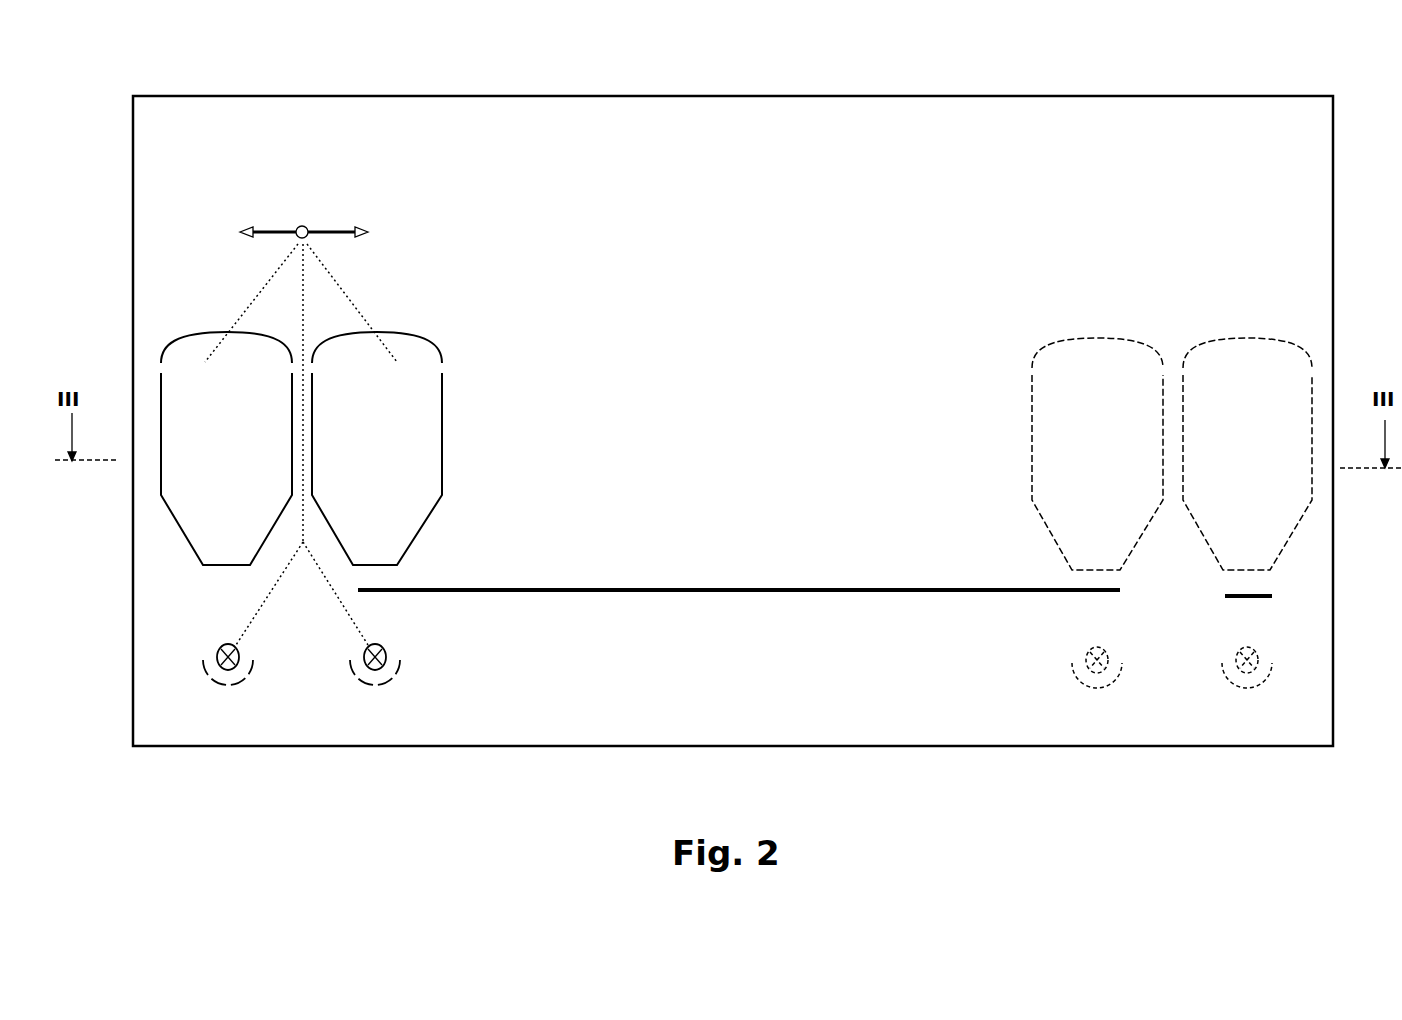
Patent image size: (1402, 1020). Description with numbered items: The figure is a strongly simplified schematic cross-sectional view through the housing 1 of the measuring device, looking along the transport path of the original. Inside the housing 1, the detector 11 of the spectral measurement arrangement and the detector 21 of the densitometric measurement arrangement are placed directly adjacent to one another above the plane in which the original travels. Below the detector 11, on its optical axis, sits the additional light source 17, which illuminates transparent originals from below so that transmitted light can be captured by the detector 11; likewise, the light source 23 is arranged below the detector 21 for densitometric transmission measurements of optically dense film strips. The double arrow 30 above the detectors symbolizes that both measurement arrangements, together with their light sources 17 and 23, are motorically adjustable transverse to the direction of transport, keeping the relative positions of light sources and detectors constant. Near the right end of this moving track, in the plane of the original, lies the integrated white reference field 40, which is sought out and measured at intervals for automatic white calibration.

The housing 1 is at (142, 190).
The double arrow 30 is at (305, 227).
The detector 21 is at (188, 362).
The detector 11 is at (412, 352).
The light source 23 is at (212, 666).
The additional light source 17 is at (385, 665).
The white reference field 40 is at (1243, 600).